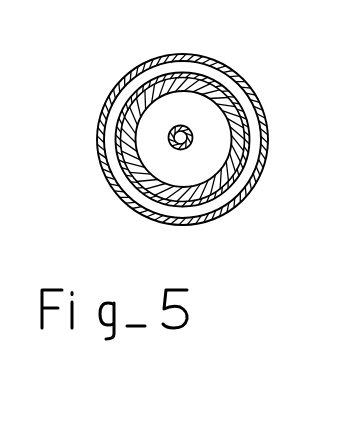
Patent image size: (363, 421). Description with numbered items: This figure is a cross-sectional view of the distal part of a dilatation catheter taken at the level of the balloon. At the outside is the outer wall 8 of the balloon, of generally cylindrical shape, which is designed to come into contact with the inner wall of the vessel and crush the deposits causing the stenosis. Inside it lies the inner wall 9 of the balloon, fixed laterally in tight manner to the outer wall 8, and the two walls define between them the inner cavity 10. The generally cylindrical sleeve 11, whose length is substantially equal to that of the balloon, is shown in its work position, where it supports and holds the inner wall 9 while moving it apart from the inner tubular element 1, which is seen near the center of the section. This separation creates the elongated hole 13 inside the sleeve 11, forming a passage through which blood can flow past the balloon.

The inner tubular element 1 is at (182, 149).
The outer wall 8 is at (248, 180).
The inner wall 9 is at (256, 114).
The inner cavity 10 is at (212, 72).
The sleeve 11 is at (133, 102).
The elongated hole 13 is at (189, 110).